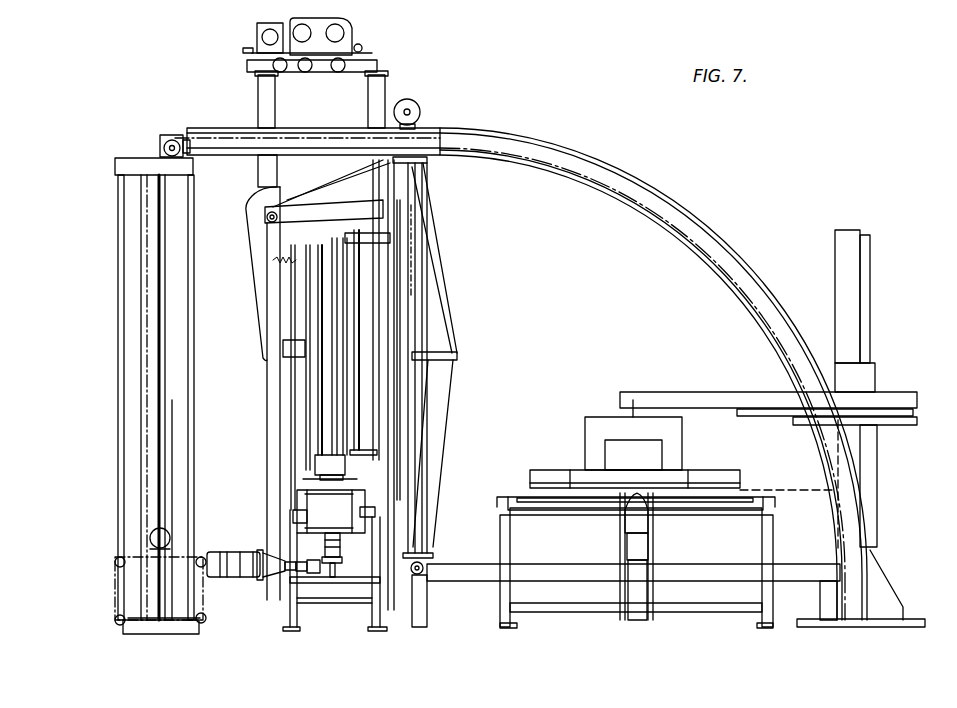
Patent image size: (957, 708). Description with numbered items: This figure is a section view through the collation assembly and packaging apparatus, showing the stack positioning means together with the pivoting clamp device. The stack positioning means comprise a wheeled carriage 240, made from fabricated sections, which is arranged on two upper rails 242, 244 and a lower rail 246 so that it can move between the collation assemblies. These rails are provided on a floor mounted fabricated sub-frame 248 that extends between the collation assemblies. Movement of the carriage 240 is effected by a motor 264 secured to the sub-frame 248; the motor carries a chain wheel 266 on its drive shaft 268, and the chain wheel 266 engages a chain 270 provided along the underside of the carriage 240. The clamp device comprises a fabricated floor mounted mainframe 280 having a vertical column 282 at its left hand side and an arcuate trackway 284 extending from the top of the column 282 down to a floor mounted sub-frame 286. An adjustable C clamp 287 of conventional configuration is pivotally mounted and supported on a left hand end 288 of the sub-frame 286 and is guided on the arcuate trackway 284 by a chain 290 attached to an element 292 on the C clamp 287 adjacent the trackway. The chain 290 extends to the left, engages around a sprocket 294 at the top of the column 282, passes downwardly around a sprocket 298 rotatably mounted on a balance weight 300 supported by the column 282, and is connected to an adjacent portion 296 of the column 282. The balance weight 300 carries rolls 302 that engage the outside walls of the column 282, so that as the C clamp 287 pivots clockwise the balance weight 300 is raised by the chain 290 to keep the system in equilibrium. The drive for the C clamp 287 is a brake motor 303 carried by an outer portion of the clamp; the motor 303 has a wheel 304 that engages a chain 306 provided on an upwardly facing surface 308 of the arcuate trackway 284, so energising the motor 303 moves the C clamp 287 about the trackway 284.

The wheeled carriage 240 is at (252, 366).
The upper rail 242 is at (300, 510).
The upper rail 244 is at (371, 516).
The lower rail 246 is at (340, 562).
The sub-frame 248 is at (256, 608).
The motor 264 is at (238, 552).
The chain wheel 266 is at (313, 575).
The drive shaft 268 is at (302, 566).
The chain 270 is at (305, 553).
The mainframe 280 is at (634, 166).
The vertical column 282 is at (106, 275).
The arcuate trackway 284 is at (703, 250).
The sub-frame 286 is at (795, 564).
The C clamp 287 is at (231, 202).
The left hand end 288 is at (460, 573).
The chain 290 is at (340, 137).
The element 292 is at (423, 148).
The sprocket 294 is at (173, 136).
The adjacent portion 296 is at (122, 165).
The sprocket 298 is at (167, 529).
The balance weight 300 is at (115, 590).
The rolls 302 is at (116, 559).
The brake motor 303 is at (419, 107).
The wheel 304 is at (405, 100).
The chain 306 is at (676, 209).
The upwardly facing surface 308 is at (548, 152).